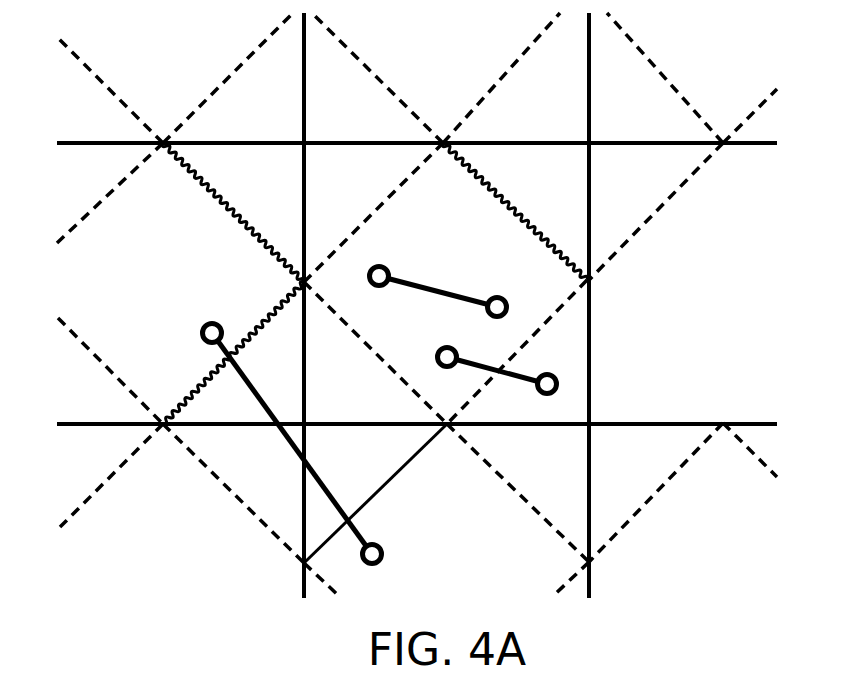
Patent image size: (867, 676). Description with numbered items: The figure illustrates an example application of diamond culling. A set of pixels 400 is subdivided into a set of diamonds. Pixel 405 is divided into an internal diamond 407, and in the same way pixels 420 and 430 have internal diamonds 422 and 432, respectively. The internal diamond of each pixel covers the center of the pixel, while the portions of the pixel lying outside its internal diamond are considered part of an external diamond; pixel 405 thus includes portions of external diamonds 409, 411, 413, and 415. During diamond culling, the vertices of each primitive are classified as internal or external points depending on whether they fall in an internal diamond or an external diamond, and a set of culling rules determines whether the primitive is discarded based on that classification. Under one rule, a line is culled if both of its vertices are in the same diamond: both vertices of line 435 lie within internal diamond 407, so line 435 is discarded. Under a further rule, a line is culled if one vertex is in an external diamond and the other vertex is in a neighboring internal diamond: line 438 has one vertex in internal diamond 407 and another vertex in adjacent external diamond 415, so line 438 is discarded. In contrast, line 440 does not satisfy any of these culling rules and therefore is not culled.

The set of pixels 400 is at (417, 305).
The pixel 405 is at (590, 202).
The internal diamond 407 is at (421, 222).
The external diamond 409 is at (324, 196).
The external diamond 411 is at (508, 185).
The external diamond 413 is at (325, 406).
The external diamond 415 is at (492, 416).
The pixel 420 is at (107, 141).
The internal diamond 422 is at (152, 278).
The pixel 430 is at (591, 579).
The internal diamond 432 is at (421, 533).
The line 435 is at (437, 288).
The line 438 is at (483, 362).
The line 440 is at (282, 434).